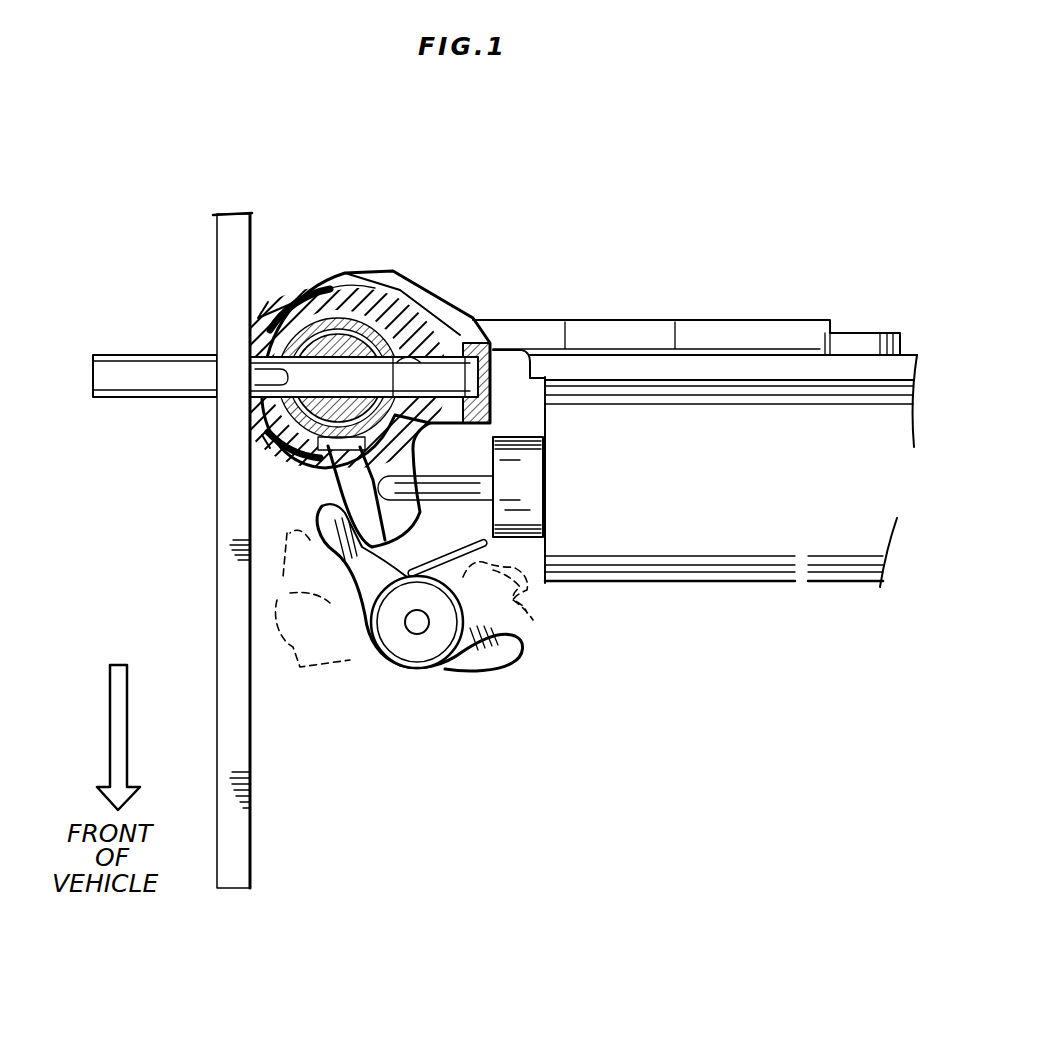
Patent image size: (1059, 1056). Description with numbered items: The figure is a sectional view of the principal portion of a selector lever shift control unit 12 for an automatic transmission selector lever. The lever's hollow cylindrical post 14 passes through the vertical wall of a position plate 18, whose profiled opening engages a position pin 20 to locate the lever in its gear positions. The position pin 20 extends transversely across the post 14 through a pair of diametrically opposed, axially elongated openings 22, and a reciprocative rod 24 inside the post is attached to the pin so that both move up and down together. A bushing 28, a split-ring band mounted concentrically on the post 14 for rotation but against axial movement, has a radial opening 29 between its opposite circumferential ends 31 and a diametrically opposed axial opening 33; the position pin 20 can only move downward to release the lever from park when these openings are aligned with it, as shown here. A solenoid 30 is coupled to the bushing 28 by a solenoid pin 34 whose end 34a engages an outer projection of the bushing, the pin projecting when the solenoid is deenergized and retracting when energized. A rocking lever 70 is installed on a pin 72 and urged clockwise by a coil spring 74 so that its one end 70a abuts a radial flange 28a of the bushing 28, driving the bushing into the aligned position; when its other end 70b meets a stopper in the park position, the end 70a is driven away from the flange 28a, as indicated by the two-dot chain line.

The selector lever shift control unit 12 is at (190, 521).
The hollow cylindrical post 14 is at (316, 303).
The position plate 18 is at (245, 806).
The position pin 20 is at (150, 355).
The openings 22 is at (418, 360).
The reciprocative rod 24 is at (350, 332).
The bushing 28 is at (393, 320).
The radial flange 28a is at (352, 480).
The radial opening 29 is at (245, 348).
The solenoid 30 is at (803, 568).
The circumferential ends 31 is at (282, 316).
The axial opening 33 is at (490, 345).
The solenoid pin 34 is at (492, 508).
The end of solenoid pin 34a is at (447, 545).
The rocking lever 70 is at (300, 660).
The one end of rocking lever 70a is at (287, 533).
The other end of rocking lever 70b is at (535, 620).
The pin 72 is at (415, 625).
The coil spring 74 is at (443, 662).